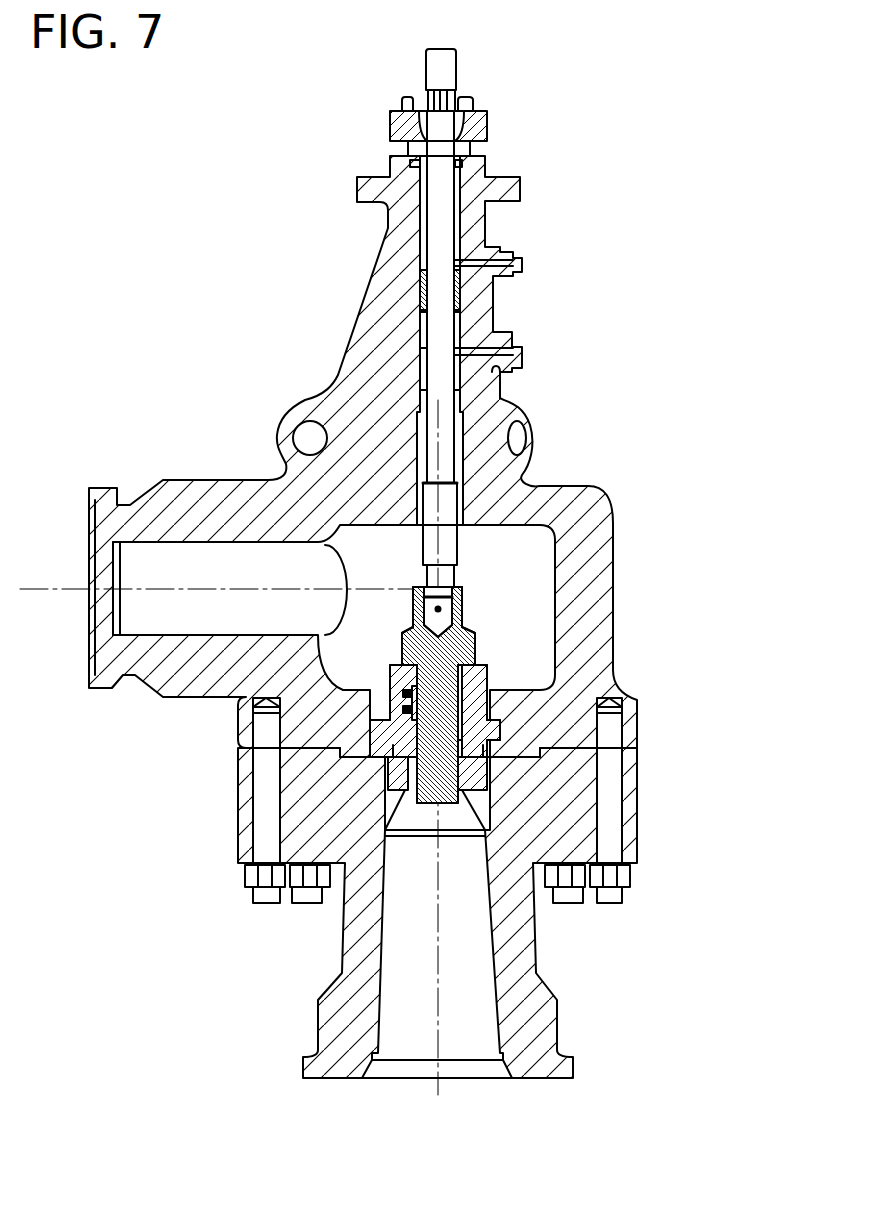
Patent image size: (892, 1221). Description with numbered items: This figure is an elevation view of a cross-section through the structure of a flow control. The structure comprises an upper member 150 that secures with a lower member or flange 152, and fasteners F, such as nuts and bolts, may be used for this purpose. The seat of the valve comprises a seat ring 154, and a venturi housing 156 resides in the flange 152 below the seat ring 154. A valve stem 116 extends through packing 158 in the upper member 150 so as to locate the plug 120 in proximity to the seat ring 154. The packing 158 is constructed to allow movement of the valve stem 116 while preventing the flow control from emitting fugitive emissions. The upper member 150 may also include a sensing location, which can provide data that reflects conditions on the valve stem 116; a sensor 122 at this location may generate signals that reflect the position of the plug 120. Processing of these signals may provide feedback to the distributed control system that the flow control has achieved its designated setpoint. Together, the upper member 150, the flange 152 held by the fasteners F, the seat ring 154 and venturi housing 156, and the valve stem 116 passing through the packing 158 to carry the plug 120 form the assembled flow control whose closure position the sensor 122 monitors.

The upper member 150 is at (163, 480).
The lower member or flange 152 is at (563, 1036).
The venturi housing 156 is at (490, 808).
The valve stem 116 is at (447, 360).
The packing 158 is at (425, 278).
The plug 120 is at (478, 635).
The seat ring 154 is at (487, 672).
The sensor 122 is at (392, 705).
The fasteners F is at (253, 895).